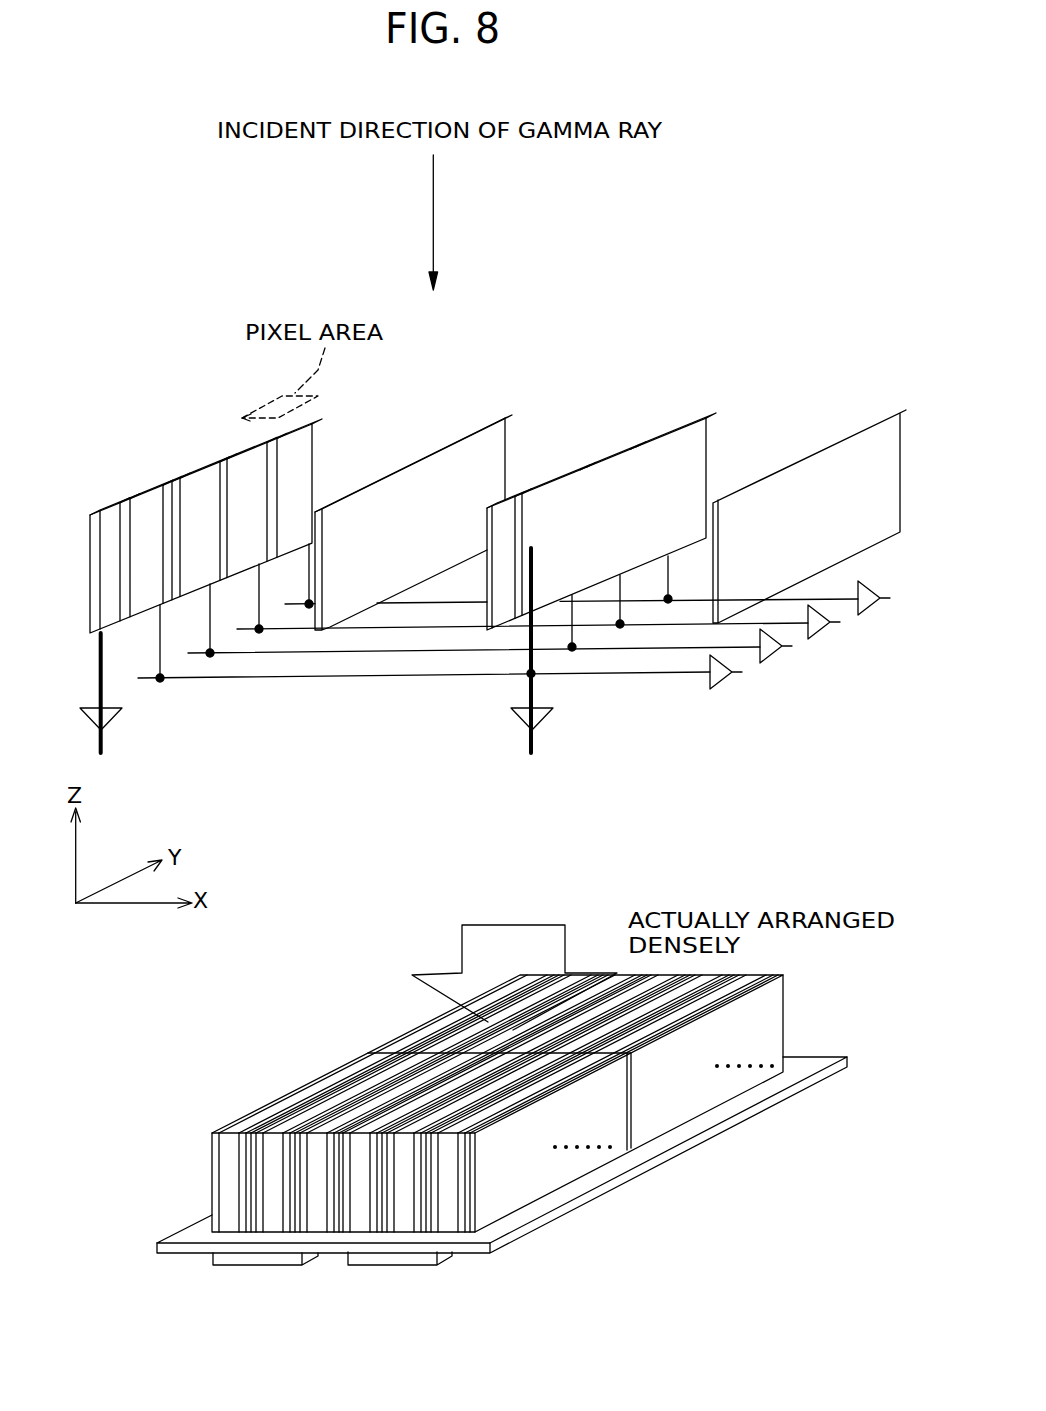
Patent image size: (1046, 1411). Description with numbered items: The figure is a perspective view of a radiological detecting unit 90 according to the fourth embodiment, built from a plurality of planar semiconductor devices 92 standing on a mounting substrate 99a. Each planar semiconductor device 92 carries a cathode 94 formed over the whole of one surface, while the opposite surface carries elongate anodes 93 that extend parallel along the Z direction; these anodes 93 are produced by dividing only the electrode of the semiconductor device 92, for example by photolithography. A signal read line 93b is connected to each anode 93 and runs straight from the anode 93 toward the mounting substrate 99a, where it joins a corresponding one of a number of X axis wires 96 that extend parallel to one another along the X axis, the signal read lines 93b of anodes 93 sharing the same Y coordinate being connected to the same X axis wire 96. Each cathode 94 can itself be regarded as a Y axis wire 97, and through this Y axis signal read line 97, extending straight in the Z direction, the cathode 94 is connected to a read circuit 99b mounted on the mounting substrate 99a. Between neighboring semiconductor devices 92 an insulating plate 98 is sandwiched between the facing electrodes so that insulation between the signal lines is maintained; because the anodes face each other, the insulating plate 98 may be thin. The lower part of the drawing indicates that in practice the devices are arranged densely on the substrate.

The radiological detecting unit 90 is at (366, 1029).
The planar semiconductor device 92 is at (205, 455).
The anode 93 is at (145, 520).
The signal read line 93b is at (160, 655).
The cathode 94 is at (688, 460).
The X axis wire 96 is at (612, 673).
The Y axis wire 97 is at (105, 685).
The insulating plate 98 is at (403, 480).
The mounting substrate 99a is at (710, 1130).
The read circuit 99b is at (767, 653).